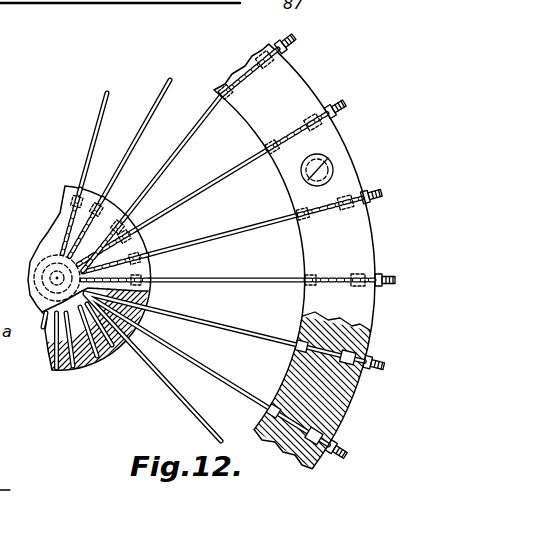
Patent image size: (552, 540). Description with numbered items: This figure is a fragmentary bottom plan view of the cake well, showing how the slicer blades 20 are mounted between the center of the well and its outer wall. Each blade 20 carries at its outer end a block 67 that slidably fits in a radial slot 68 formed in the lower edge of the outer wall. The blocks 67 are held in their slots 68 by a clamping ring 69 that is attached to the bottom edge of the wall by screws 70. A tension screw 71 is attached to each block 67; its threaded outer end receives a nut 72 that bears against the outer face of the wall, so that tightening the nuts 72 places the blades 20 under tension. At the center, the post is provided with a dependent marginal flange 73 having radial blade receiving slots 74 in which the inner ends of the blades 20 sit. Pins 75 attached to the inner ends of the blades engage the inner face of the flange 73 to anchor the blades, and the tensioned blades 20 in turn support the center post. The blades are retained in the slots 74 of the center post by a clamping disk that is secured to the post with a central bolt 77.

The blades 20 is at (148, 117).
The block 67 is at (342, 200).
The radial slot 68 is at (308, 224).
The clamping ring 69 is at (233, 72).
The screws 70 is at (334, 166).
The tension screws 71 is at (374, 203).
The nuts 72 is at (338, 105).
The dependent marginal flange 73 is at (115, 352).
The radial blade receiving slots 74 is at (53, 238).
The pins 75 is at (133, 220).
The central bolt 77 is at (17, 335).